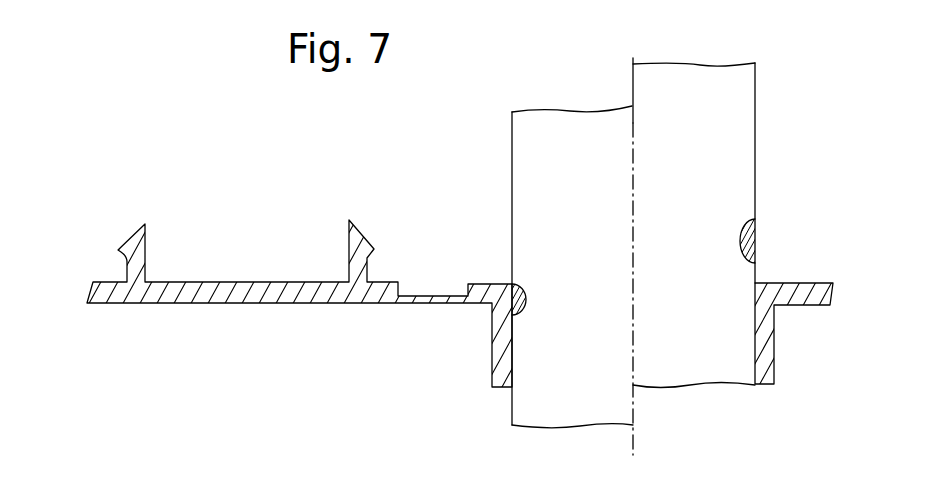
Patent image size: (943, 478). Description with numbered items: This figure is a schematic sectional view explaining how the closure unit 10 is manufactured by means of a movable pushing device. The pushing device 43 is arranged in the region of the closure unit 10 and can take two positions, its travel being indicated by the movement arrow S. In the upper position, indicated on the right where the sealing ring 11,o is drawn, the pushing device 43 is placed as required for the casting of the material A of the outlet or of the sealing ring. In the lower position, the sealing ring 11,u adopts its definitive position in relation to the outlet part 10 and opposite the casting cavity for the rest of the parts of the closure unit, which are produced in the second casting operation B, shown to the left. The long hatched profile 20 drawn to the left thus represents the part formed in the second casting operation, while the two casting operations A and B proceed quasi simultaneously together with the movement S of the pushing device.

The mounting rail / profile bar 20 is at (248, 247).
The closure unit 10 is at (578, 274).
The pushing device 43 is at (745, 157).
The sealing ring in lower position 11,u is at (534, 312).
The sealing ring in upper position 11,o is at (750, 235).
The casting operation B is at (84, 290).
The movement of the pushing devices S is at (648, 262).
The casting of material A is at (740, 241).